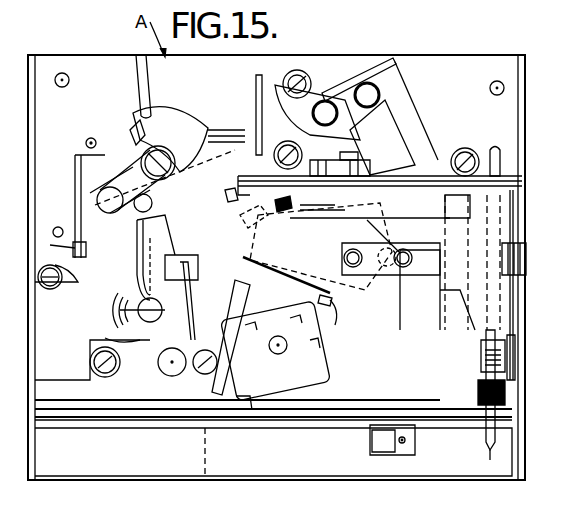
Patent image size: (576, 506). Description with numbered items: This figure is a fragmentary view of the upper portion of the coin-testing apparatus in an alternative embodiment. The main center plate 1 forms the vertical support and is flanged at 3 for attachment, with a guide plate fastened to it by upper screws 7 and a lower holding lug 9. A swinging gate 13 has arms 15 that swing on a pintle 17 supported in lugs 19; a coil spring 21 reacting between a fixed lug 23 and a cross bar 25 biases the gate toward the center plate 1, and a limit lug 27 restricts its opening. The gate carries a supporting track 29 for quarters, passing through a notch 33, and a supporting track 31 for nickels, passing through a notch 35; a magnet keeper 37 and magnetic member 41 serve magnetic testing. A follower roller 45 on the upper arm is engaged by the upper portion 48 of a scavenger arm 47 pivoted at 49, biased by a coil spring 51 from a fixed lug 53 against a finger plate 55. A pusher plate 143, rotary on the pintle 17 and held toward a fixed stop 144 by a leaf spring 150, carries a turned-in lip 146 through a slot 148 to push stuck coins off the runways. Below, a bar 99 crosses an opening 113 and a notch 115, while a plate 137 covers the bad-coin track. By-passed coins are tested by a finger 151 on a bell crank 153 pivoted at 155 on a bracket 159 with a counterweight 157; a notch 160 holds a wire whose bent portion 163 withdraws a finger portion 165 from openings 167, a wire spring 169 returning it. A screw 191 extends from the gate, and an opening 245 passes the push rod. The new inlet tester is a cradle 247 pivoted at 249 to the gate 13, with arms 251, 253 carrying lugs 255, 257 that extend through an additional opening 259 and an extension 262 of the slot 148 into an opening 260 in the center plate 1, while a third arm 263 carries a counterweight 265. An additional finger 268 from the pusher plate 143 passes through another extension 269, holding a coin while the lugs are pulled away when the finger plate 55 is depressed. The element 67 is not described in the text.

The main center plate 1 is at (440, 70).
The flange 3 is at (28, 92).
The upper screws 7 is at (470, 135).
The lower holding lug 9 is at (525, 420).
The swinging gate 13 is at (88, 148).
The arms 15 is at (380, 190).
The pintle 17 is at (490, 452).
The lugs 19 is at (480, 205).
The coil spring 21 is at (481, 364).
The fixed lug 23 is at (515, 362).
The cross bar 25 is at (448, 336).
The limit lug 27 is at (73, 248).
The supporting track 29 is at (336, 324).
The supporting track 31 is at (246, 402).
The notch 33 is at (332, 300).
The notch 35 is at (272, 400).
The magnet keeper 37 is at (335, 206).
The magnetic member 41 is at (318, 375).
The follower roller 45 is at (375, 168).
The scavenger arm 47 is at (412, 100).
The upper portion 48 is at (385, 152).
The pivot 49 is at (305, 76).
The coil spring 51 is at (317, 100).
The fixed lug 53 is at (262, 80).
The finger plate 55 is at (375, 68).
The arm 67 is at (136, 72).
The bar 99 is at (372, 450).
The opening 113 is at (398, 425).
The notch 115 is at (415, 448).
The plate 137 is at (146, 468).
The pusher plate 143 is at (405, 295).
The fixed stop 144 is at (291, 203).
The turned-in lip 146 is at (138, 302).
The slot 148 is at (120, 318).
The leaf spring 150 is at (430, 255).
The finger 151 is at (175, 250).
The bell crank 153 is at (133, 378).
The pivot 155 is at (172, 378).
The counterweight 157 is at (95, 380).
The bracket 159 is at (240, 320).
The notch 160 is at (182, 306).
The bent portion 163 is at (185, 250).
The finger portion 165 is at (110, 336).
The openings 167 is at (130, 292).
The wire spring 169 is at (228, 352).
The screw 191 is at (50, 290).
The opening 245 is at (382, 137).
The cradle 247 is at (137, 140).
The pivot 249 is at (165, 178).
The arm 251 is at (152, 112).
The arm 253 is at (188, 142).
The lug 255 is at (140, 122).
The lug 257 is at (255, 142).
The additional opening 259 is at (190, 116).
The opening 260 is at (135, 120).
The extension 262 is at (245, 224).
The third arm 263 is at (75, 172).
The counterweight 265 is at (96, 212).
The additional finger 268 is at (232, 205).
The extension 269 is at (232, 130).